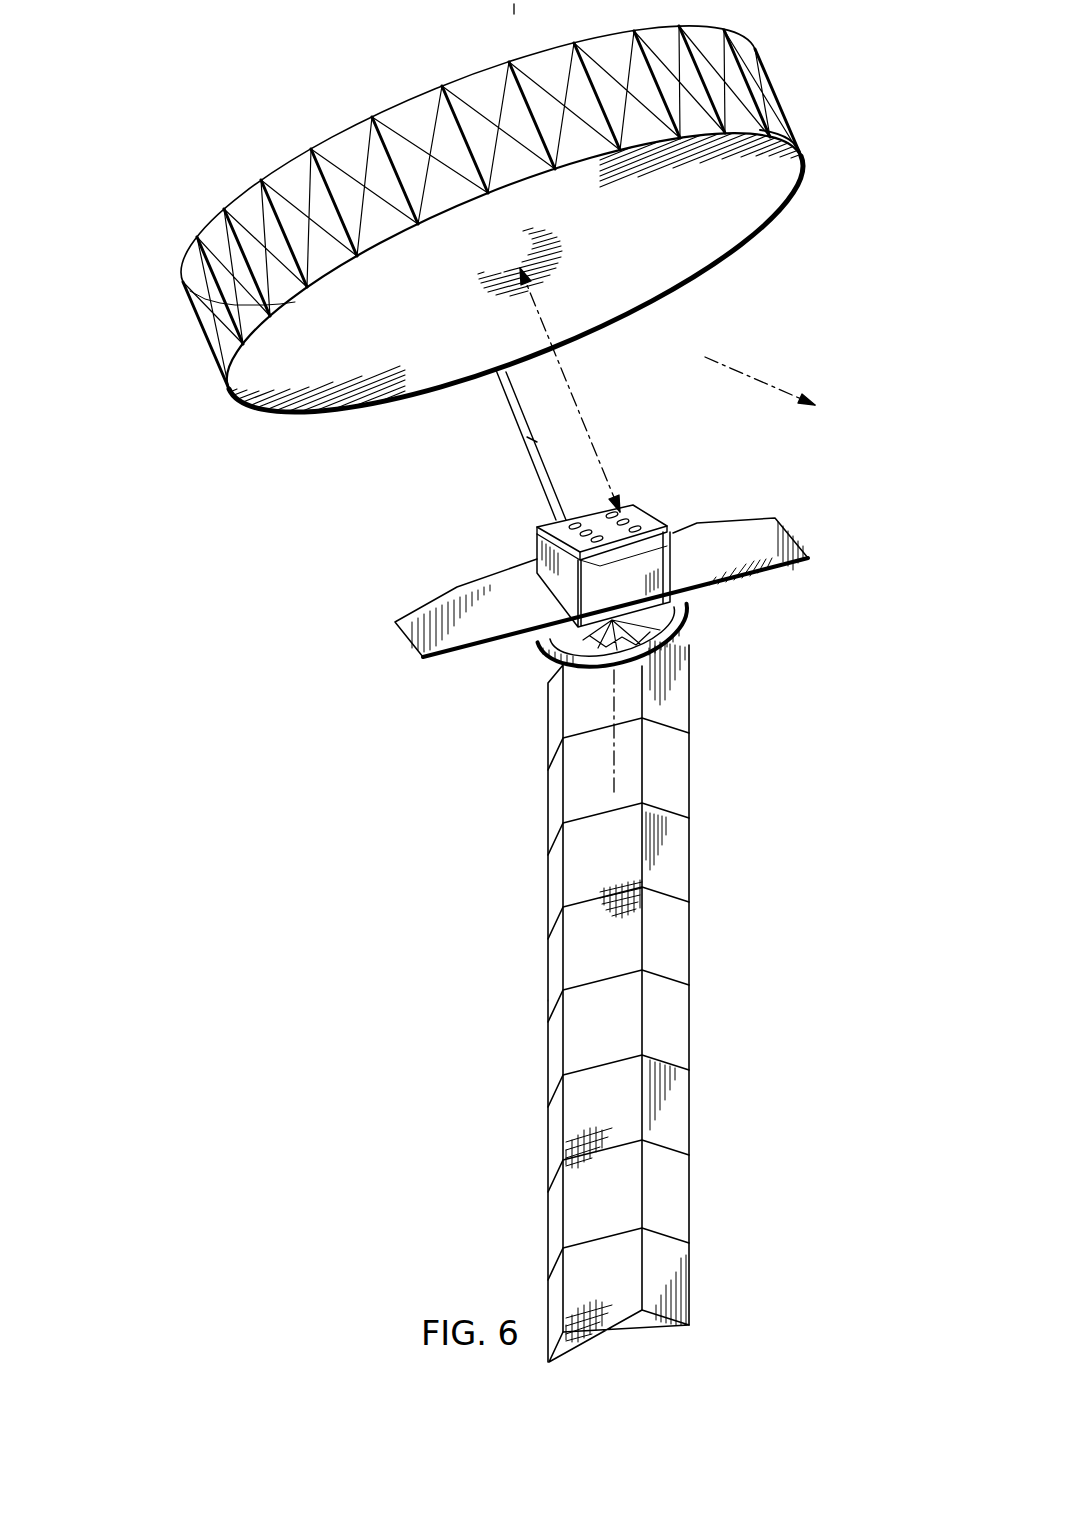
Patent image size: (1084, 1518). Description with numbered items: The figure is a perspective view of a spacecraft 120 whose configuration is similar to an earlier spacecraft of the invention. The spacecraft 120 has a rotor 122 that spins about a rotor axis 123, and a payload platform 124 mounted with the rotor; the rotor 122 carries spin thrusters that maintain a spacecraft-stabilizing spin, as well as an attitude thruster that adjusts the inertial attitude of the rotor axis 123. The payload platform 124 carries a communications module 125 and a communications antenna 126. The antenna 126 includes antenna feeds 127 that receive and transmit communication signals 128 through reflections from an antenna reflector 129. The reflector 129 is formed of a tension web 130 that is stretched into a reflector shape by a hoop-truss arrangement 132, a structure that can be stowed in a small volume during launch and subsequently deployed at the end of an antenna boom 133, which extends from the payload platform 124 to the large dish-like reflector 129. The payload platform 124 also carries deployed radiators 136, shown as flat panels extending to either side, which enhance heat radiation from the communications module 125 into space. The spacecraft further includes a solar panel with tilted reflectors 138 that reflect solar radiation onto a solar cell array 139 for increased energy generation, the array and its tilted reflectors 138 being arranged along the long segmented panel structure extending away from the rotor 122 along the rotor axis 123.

The spacecraft 120 is at (355, 793).
The rotor 122 is at (540, 657).
The rotor axis 123 is at (618, 1001).
The payload platform 124 is at (532, 545).
The communications module 125 is at (680, 582).
The communications antenna 126 is at (730, 263).
The antenna feeds 127 is at (643, 515).
The communication signals 128 is at (612, 306).
The antenna reflector 129 is at (808, 163).
The tension web 130 is at (792, 207).
The hoop-truss arrangement 132 is at (790, 105).
The antenna boom 133 is at (528, 462).
The deployed radiators 136 is at (773, 520).
The tilted reflectors 138 is at (658, 837).
The solar cell array 139 is at (645, 913).